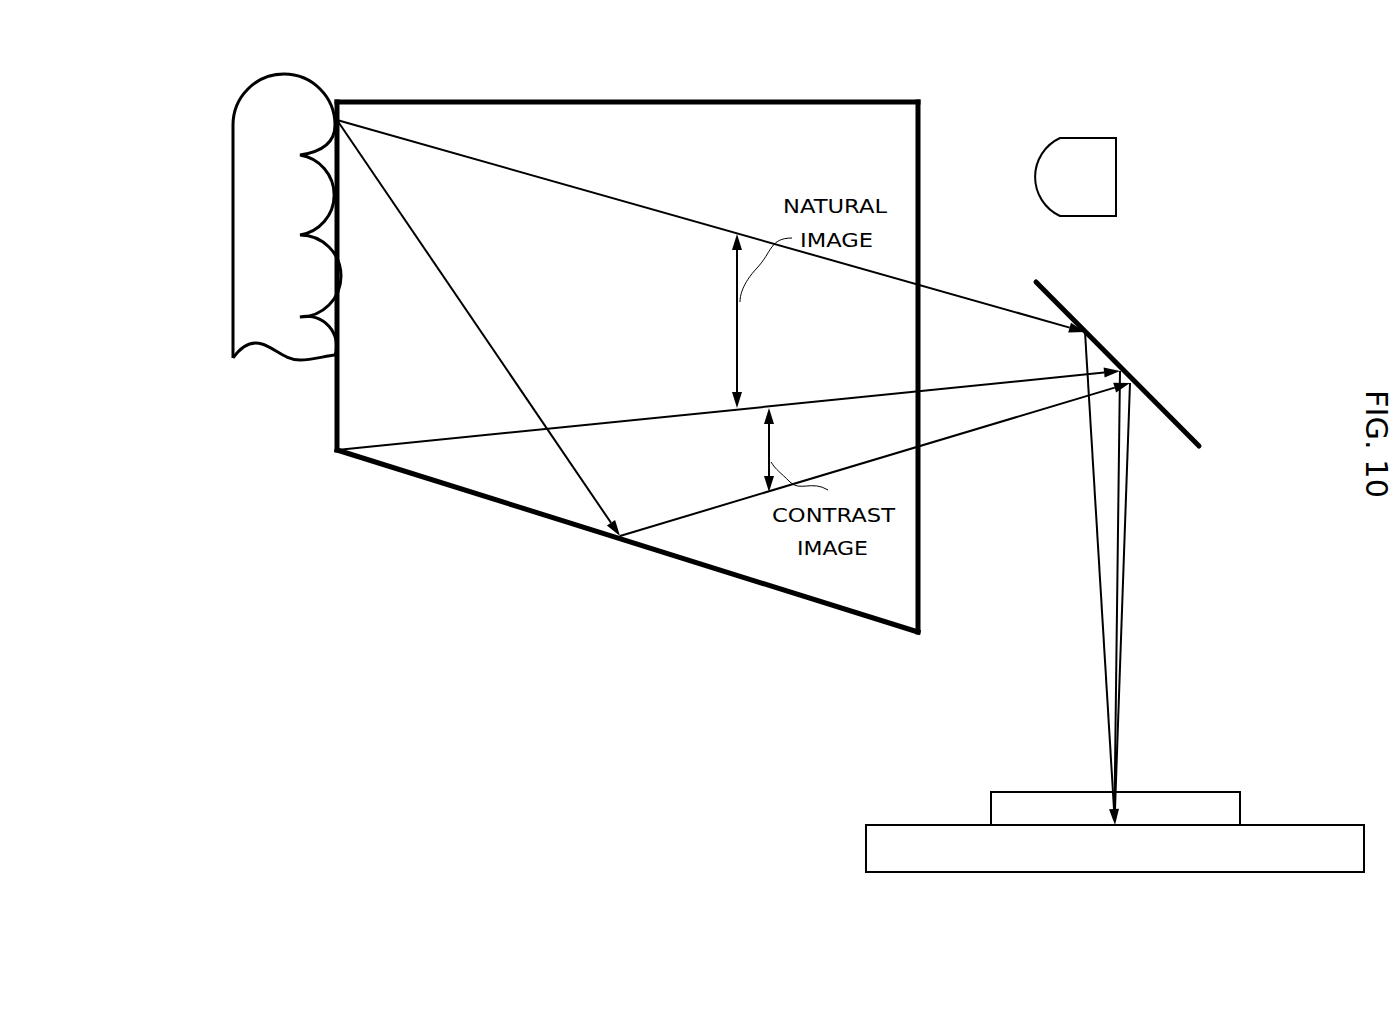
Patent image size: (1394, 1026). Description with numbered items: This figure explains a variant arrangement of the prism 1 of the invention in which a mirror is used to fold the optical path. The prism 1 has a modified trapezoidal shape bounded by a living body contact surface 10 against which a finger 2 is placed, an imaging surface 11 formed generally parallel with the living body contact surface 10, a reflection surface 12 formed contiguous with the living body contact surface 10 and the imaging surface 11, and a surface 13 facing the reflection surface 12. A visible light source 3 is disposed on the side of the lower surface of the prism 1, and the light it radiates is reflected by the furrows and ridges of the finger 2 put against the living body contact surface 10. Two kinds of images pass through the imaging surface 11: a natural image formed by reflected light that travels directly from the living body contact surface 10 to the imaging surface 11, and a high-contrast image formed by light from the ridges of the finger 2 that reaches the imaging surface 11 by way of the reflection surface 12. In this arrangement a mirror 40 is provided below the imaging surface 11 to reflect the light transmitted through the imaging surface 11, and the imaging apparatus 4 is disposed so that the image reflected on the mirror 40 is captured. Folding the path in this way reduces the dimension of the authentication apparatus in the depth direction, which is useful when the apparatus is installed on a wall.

The prism 1 is at (662, 369).
The surface 13 is at (724, 96).
The imaging surface 11 is at (926, 202).
The reflection surface 12 is at (694, 577).
The living body contact surface 10 is at (323, 437).
The finger 2 is at (233, 275).
The visible light source 3 is at (1112, 197).
The mirror 40 is at (1180, 348).
The imaging apparatus 4 is at (1115, 832).